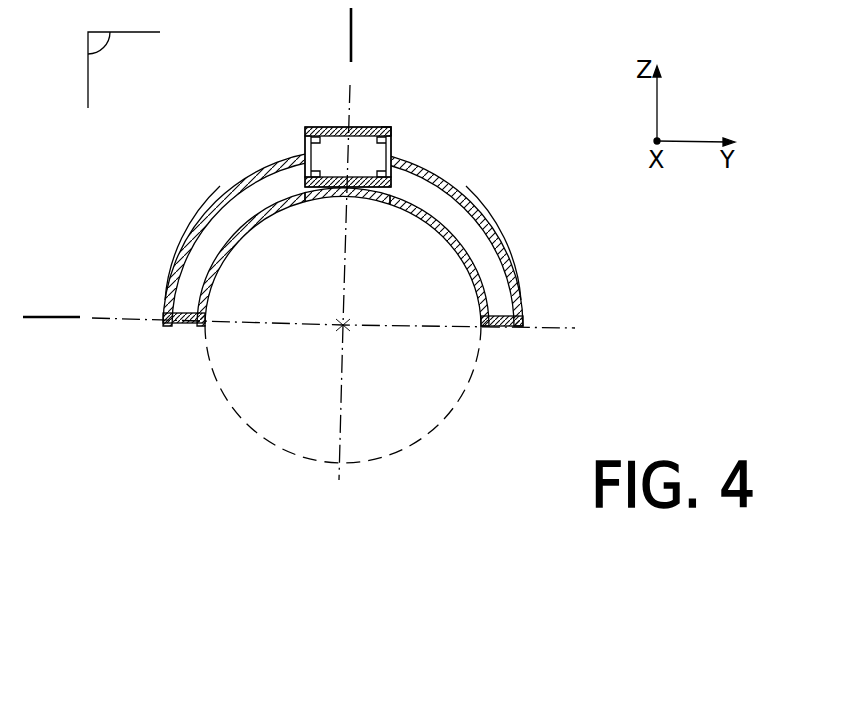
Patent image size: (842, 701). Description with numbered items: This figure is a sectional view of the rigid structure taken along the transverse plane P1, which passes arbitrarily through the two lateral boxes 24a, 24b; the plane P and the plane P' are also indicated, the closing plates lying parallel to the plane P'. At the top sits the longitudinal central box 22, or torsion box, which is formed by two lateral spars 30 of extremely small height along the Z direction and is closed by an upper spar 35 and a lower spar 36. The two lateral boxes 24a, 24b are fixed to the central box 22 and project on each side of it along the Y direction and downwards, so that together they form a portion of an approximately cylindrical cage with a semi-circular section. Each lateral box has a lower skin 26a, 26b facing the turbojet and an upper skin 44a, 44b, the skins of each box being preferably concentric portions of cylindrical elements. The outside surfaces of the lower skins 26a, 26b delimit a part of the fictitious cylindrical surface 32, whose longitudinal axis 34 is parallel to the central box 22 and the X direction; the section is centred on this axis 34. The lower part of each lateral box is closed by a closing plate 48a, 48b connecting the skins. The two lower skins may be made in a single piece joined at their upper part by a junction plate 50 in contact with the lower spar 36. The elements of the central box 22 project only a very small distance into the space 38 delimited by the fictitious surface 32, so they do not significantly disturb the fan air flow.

The longitudinal central box 22 is at (365, 127).
The lateral box 24a is at (492, 220).
The lateral box 24b is at (236, 179).
The lower skin 26a is at (447, 242).
The lower skin 26b is at (213, 279).
The lateral spar 30 is at (375, 150).
The fictitious cylindrical surface 32 is at (472, 372).
The longitudinal axis 34 is at (344, 325).
The upper spar 35 is at (392, 138).
The lower spar 36 is at (392, 178).
The space 38 is at (307, 389).
The upper skin 44a is at (513, 265).
The upper skin 44b is at (182, 249).
The closing plate 48a is at (503, 328).
The closing plate 48b is at (180, 324).
The junction plate 50 is at (334, 200).
The section plane P is at (383, 31).
The transverse plane P1 is at (100, 54).
The plane P' is at (50, 295).